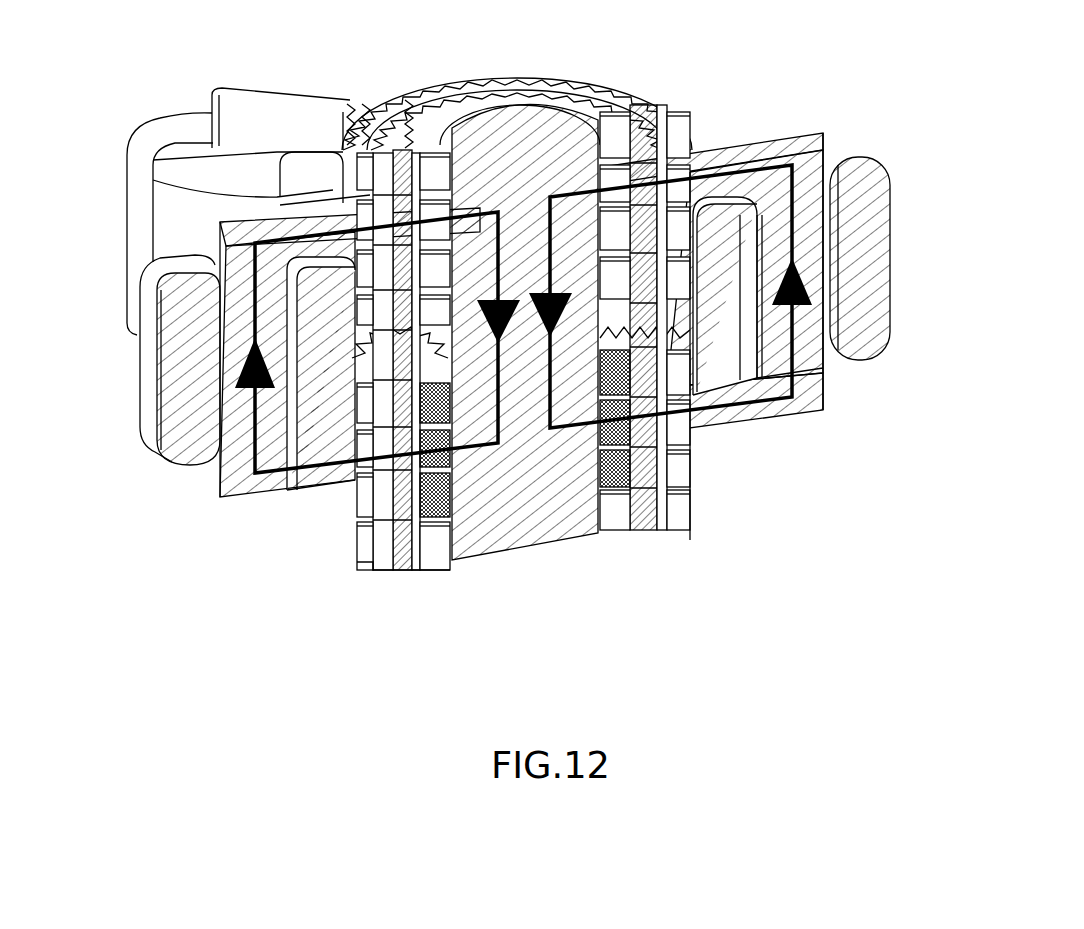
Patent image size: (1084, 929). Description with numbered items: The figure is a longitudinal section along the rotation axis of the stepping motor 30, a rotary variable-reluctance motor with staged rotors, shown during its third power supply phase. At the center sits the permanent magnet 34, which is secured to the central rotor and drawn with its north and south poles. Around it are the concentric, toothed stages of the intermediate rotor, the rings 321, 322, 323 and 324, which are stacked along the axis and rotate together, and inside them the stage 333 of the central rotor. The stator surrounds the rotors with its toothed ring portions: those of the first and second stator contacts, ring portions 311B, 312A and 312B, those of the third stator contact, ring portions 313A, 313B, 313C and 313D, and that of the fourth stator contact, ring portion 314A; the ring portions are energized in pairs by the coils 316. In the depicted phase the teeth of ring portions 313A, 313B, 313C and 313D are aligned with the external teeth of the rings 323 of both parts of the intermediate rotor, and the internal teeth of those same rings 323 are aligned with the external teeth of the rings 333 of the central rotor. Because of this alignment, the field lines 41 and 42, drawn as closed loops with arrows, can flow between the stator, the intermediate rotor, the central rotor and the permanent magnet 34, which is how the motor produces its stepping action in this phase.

The stepping motor 30 is at (798, 43).
The permanent magnet 34 is at (557, 543).
The field lines 41 is at (150, 277).
The field lines 42 is at (826, 155).
The ring portion 311B is at (350, 550).
The ring portion 312A is at (683, 473).
The ring portion 312B is at (368, 502).
The ring portion 313A is at (713, 417).
The ring portion 313B is at (218, 470).
The ring portion 313C is at (705, 165).
The ring portion 313D is at (347, 200).
The ring portion 314A is at (810, 383).
The coil 316 is at (877, 172).
The stage 321 is at (640, 527).
The stage 322 is at (358, 520).
The stage 323 is at (650, 172).
The stage 324 is at (750, 417).
The stage 333 is at (615, 175).